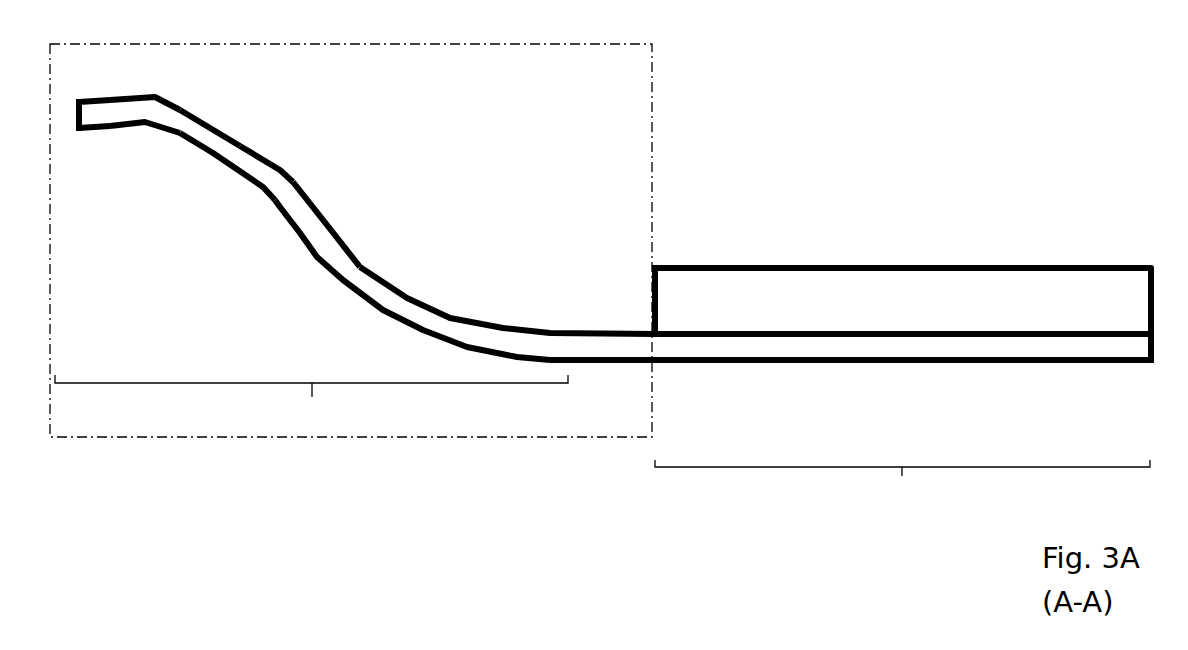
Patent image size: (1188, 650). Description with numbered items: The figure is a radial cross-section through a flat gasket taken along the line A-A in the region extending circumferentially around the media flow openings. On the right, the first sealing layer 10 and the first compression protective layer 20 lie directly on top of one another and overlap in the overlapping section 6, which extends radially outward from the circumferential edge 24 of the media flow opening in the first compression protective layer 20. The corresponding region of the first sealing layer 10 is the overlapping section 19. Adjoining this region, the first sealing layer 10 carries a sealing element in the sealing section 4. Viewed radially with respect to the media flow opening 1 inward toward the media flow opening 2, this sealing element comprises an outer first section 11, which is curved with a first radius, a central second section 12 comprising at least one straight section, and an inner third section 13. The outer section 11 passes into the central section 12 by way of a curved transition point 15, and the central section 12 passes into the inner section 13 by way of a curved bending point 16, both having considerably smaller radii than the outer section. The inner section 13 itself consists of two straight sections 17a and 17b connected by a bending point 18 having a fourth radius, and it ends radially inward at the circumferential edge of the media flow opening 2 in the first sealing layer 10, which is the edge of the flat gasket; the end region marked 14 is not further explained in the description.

The media flow opening 1 is at (1100, 228).
The media flow opening 2 is at (66, 132).
The sealing section 4 is at (311, 402).
The overlapping section 6 is at (902, 485).
The first sealing layer 10 is at (848, 345).
The outer first section 11 is at (422, 312).
The central second section 12 is at (315, 227).
The inner third section 13 is at (195, 123).
The end wall 14 is at (73, 128).
The curved transition point 15 is at (335, 283).
The curved bending point 16 is at (283, 177).
The straight section 17a is at (208, 142).
The straight section 17b is at (115, 115).
The bending point 18 is at (158, 92).
The overlapping section 19 is at (975, 345).
The first compression protective layer 20 is at (850, 297).
The circumferential edge 24 is at (648, 292).